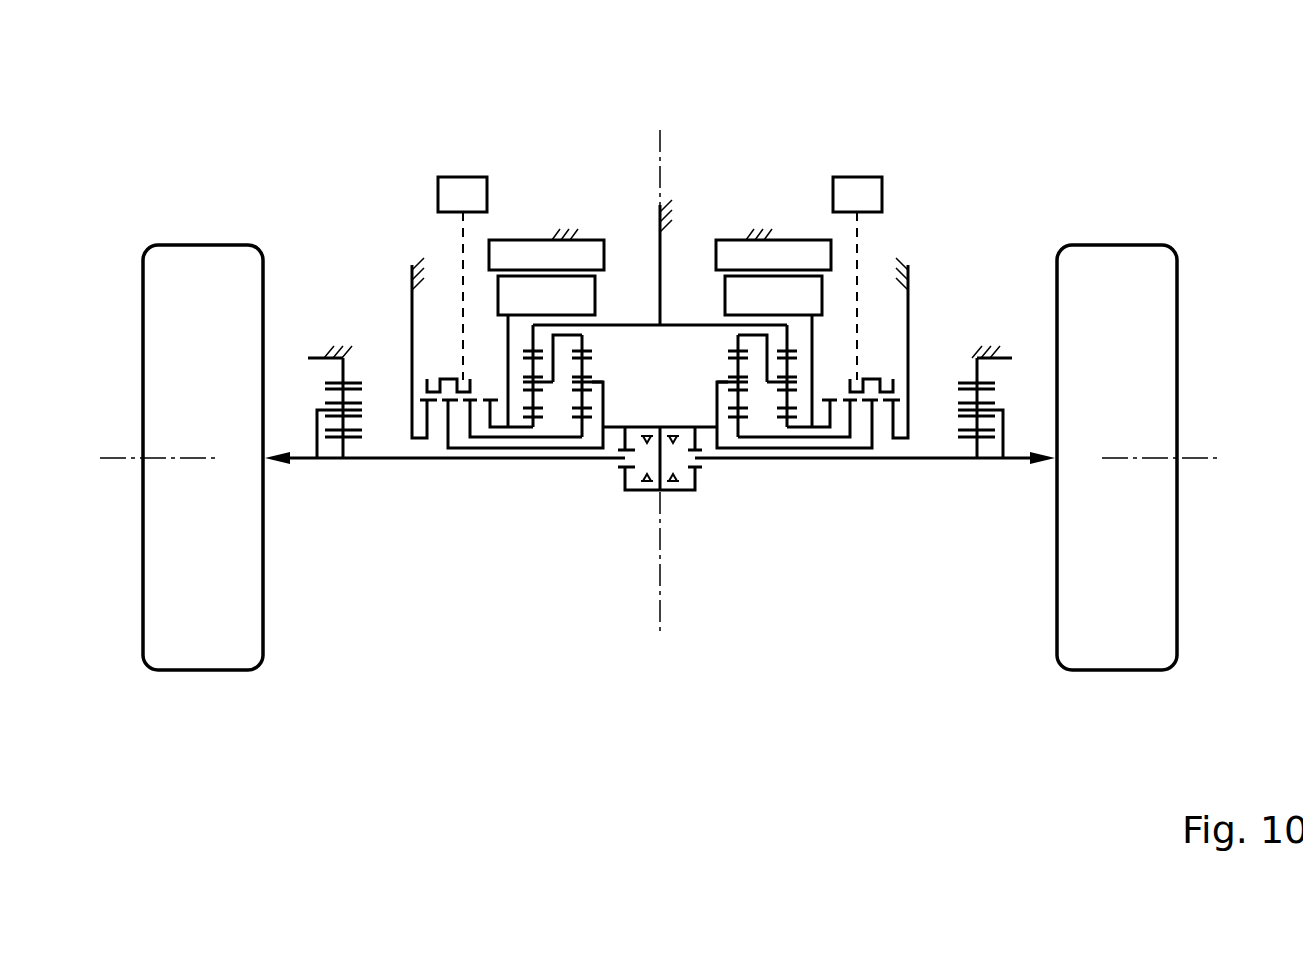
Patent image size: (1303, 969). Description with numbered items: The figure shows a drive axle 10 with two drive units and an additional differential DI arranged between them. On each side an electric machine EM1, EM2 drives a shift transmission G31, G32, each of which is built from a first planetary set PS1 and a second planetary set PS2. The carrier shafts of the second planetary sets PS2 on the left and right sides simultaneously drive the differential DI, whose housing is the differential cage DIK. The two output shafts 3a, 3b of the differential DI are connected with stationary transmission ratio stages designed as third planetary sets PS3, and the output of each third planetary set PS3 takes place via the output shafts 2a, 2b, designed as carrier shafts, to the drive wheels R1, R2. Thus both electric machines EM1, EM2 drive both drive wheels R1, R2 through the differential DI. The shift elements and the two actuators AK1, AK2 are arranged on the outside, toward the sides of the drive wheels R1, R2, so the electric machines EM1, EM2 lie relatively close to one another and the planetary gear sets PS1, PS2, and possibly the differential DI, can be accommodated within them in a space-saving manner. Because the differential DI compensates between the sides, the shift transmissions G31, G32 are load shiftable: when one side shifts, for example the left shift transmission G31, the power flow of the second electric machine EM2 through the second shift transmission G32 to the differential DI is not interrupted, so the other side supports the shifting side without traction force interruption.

The drive axle 10 is at (969, 250).
The drive wheel R1 is at (223, 650).
The drive wheel R2 is at (1090, 687).
The output shaft 2a is at (302, 462).
The output shaft 2b is at (1020, 462).
The output shaft of the differential 3a is at (417, 462).
The output shaft of the differential 3b is at (902, 462).
The actuator AK1 is at (460, 190).
The actuator AK2 is at (853, 190).
The electric machine EM1 is at (542, 235).
The second electric machine EM2 is at (781, 235).
The shift transmission G31 is at (557, 640).
The second shift transmission G32 is at (777, 640).
The first planetary set PS1 is at (533, 470).
The second planetary set PS2 is at (583, 470).
The third planetary set PS3 is at (343, 470).
The differential DI is at (650, 503).
The differential cage DIK is at (643, 425).